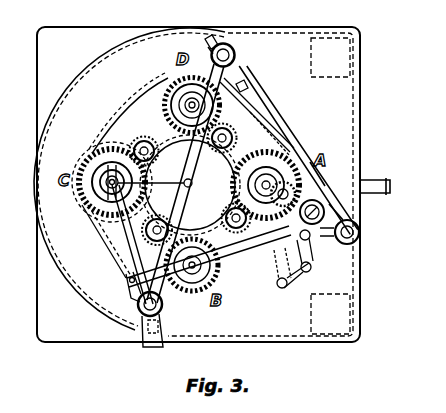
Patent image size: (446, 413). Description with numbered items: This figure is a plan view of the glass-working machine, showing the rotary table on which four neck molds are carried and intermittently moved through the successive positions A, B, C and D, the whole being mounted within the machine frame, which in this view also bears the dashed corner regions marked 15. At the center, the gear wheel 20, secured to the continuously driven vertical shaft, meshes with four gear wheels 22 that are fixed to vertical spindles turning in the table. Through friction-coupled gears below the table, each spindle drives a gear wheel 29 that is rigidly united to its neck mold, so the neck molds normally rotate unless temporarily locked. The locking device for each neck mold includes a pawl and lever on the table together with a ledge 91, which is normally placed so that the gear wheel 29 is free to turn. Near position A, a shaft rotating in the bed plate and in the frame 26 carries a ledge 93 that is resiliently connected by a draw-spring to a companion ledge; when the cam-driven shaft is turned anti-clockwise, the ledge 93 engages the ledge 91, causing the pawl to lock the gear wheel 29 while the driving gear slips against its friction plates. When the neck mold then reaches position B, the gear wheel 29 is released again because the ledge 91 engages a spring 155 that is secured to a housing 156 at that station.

The dashed mounting recess 15 is at (340, 61).
The gear wheel 20 is at (179, 185).
The gear wheels 22 is at (238, 130).
The frame 26 is at (315, 180).
The gear wheels 29 is at (180, 88).
The ledge 91 is at (99, 148).
The ledge 93 is at (329, 200).
The spring 155 is at (134, 291).
The housing 156 is at (174, 318).